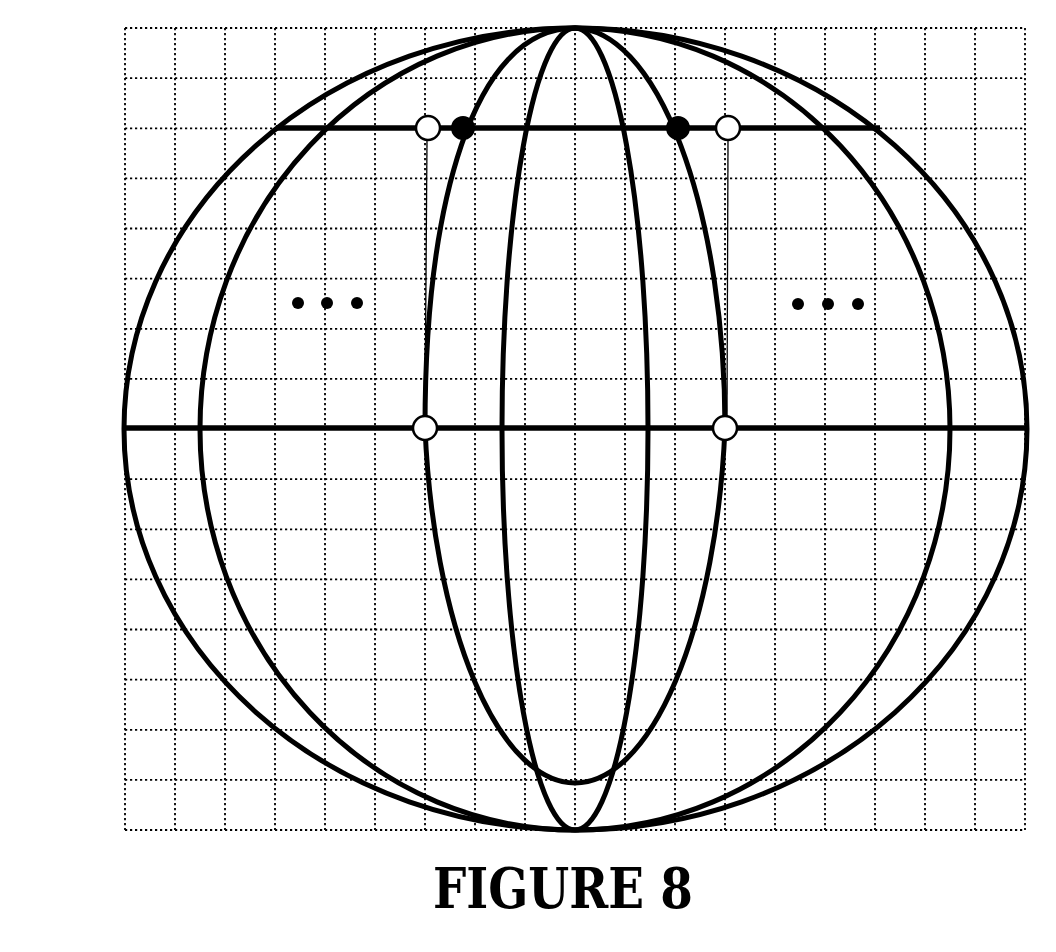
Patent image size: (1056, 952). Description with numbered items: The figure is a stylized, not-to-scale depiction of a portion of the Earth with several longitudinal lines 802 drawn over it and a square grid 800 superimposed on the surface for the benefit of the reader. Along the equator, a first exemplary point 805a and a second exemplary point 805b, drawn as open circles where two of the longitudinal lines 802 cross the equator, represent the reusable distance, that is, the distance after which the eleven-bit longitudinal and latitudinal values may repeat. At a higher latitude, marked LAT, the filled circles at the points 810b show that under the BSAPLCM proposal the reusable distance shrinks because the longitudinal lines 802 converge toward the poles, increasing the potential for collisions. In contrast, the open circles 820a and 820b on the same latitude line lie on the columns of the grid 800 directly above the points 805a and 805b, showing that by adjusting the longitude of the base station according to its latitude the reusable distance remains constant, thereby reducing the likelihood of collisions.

The square grid 800 is at (120, 596).
The longitudinal lines 802 is at (646, 302).
The first exemplary point 805a is at (421, 432).
The second exemplary point 805b is at (730, 433).
The point at latitude LAT under BSAPLCM proposal 810b is at (464, 140).
The point at latitude LAT under the invention 820a is at (423, 139).
The point at latitude LAT under the invention 820b is at (735, 136).